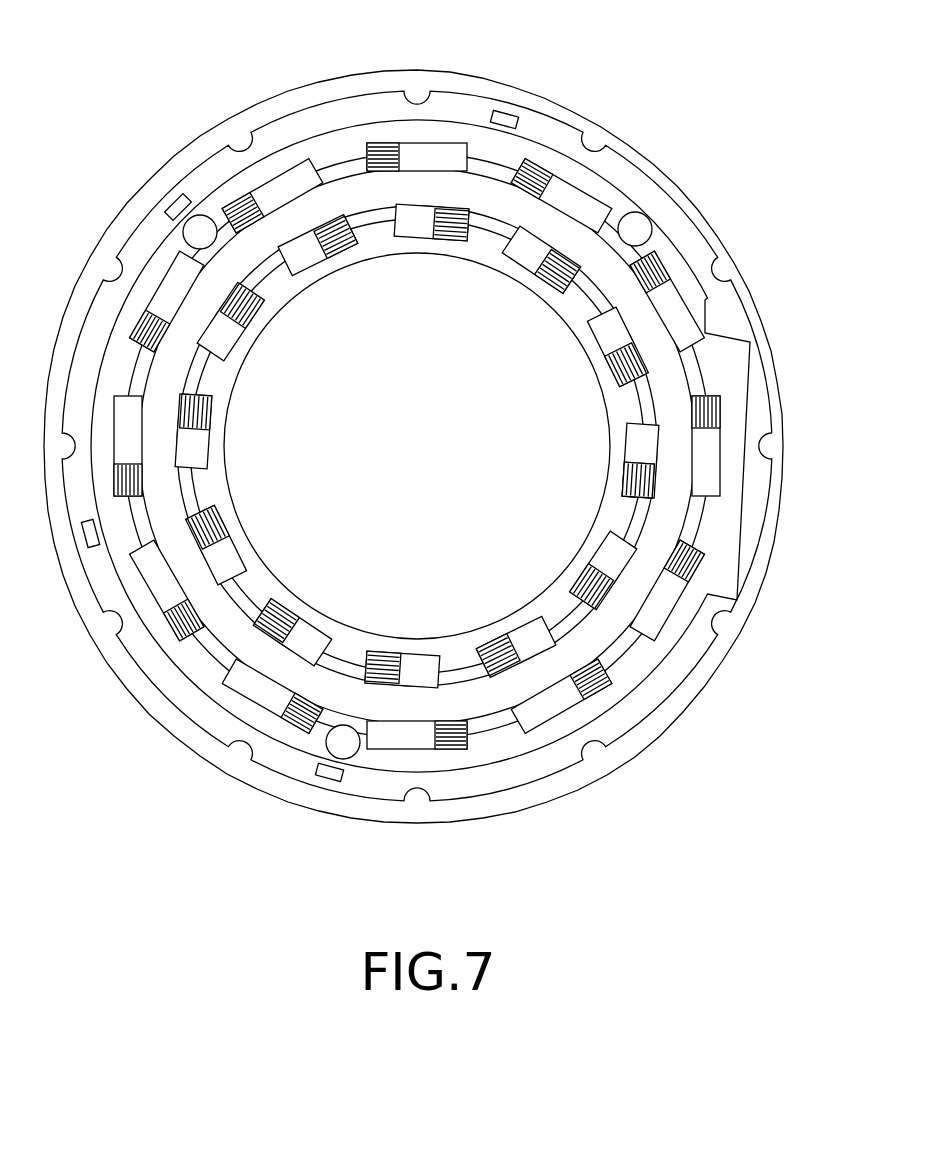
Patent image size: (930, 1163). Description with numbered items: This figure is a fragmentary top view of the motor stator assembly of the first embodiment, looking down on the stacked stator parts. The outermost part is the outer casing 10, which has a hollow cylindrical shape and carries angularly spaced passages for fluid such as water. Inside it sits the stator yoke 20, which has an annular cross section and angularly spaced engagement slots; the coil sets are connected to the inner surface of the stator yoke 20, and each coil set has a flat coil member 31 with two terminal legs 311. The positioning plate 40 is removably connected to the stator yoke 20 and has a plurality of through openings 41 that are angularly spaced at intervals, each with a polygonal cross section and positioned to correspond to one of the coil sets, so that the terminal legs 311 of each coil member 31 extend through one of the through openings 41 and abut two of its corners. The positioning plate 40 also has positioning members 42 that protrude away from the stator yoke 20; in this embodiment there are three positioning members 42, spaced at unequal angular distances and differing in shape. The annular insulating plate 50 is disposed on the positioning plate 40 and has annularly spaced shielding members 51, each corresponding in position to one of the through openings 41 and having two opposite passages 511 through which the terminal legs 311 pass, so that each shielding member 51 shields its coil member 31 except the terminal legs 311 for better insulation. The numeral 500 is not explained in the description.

The outer casing 10 is at (510, 75).
The stator yoke 20 is at (598, 142).
The coil member 31 is at (668, 238).
The terminal legs 311 is at (660, 270).
The positioning plate 40 is at (360, 135).
The through openings 41 is at (386, 655).
The positioning members 42 is at (200, 228).
The insulating plate 50 is at (573, 722).
The shielding members 51 is at (580, 323).
The coil assembly 500 is at (600, 690).
The opposite passages 511 is at (620, 368).